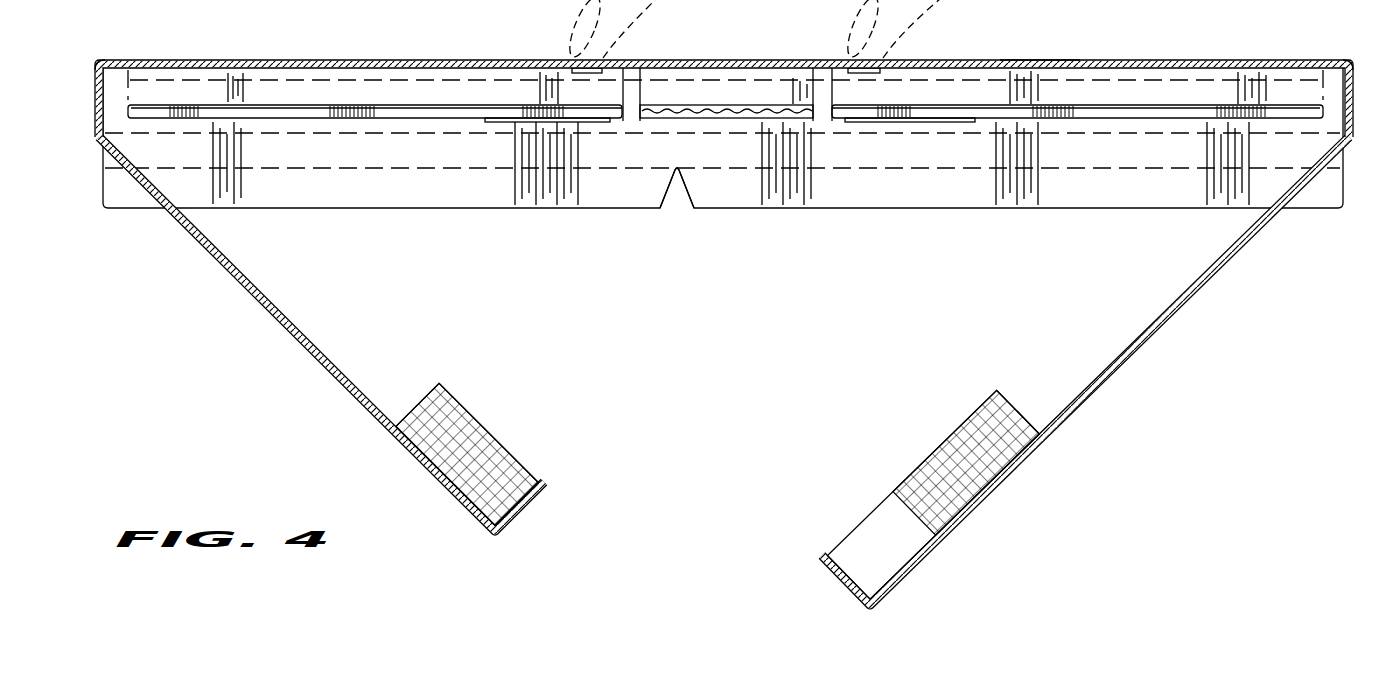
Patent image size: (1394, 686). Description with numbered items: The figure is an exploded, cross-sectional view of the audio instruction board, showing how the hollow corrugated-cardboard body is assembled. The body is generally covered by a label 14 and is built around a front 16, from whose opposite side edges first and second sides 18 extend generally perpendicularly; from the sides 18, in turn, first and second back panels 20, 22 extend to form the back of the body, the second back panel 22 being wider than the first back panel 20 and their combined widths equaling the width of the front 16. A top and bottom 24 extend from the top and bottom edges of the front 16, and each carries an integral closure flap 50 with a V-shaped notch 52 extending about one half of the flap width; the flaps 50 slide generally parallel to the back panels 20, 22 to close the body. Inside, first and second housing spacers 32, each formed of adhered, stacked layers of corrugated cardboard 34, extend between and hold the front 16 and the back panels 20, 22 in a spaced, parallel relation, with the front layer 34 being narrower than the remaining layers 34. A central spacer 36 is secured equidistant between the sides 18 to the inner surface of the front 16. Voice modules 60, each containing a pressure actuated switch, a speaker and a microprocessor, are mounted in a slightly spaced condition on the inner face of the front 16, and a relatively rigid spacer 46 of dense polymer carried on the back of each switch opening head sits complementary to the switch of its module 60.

The label 14 is at (1165, 60).
The front 16 is at (1040, 60).
The first and second sides 18 is at (95, 97).
The first back panel 20 is at (262, 305).
The second back panel 22 is at (1210, 283).
The top and bottom 24 is at (500, 125).
The housing spacers 32 is at (418, 400).
The layers of corrugated cardboard 34 is at (437, 382).
The central spacer 36 is at (757, 121).
The rigid spacer 46 is at (597, 73).
The closure flaps 50 is at (452, 148).
The V-shaped notch 52 is at (677, 190).
The voice modules 60 is at (316, 122).